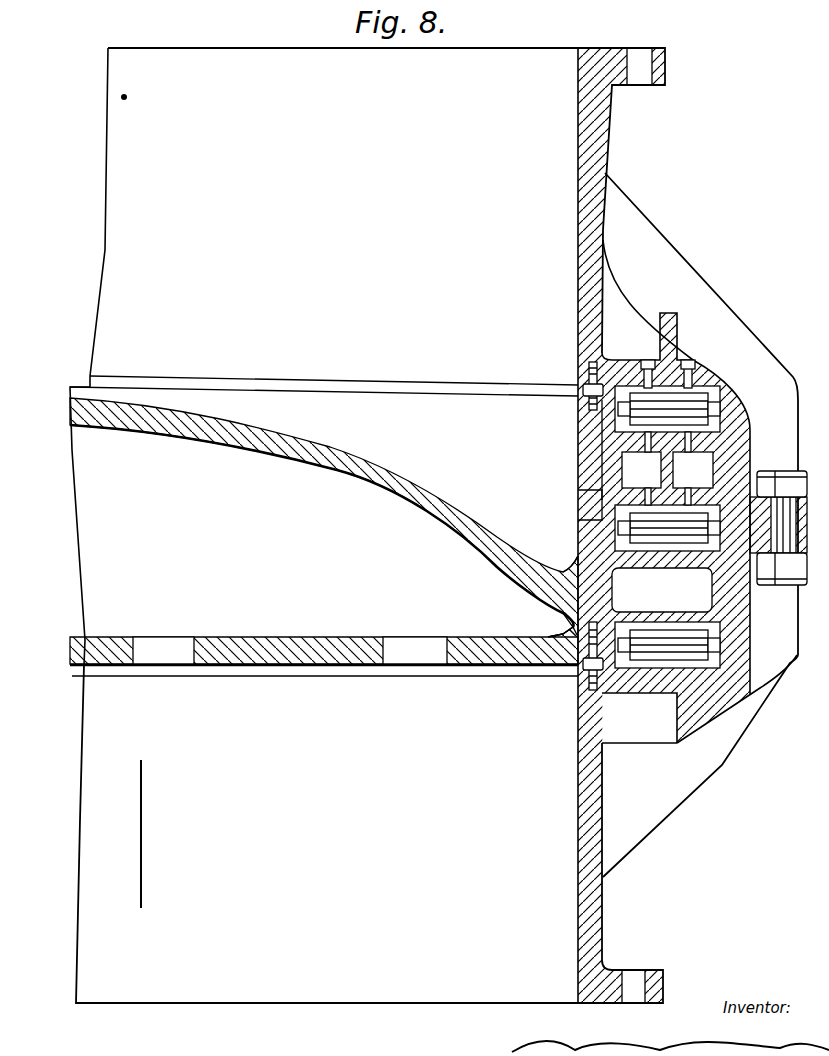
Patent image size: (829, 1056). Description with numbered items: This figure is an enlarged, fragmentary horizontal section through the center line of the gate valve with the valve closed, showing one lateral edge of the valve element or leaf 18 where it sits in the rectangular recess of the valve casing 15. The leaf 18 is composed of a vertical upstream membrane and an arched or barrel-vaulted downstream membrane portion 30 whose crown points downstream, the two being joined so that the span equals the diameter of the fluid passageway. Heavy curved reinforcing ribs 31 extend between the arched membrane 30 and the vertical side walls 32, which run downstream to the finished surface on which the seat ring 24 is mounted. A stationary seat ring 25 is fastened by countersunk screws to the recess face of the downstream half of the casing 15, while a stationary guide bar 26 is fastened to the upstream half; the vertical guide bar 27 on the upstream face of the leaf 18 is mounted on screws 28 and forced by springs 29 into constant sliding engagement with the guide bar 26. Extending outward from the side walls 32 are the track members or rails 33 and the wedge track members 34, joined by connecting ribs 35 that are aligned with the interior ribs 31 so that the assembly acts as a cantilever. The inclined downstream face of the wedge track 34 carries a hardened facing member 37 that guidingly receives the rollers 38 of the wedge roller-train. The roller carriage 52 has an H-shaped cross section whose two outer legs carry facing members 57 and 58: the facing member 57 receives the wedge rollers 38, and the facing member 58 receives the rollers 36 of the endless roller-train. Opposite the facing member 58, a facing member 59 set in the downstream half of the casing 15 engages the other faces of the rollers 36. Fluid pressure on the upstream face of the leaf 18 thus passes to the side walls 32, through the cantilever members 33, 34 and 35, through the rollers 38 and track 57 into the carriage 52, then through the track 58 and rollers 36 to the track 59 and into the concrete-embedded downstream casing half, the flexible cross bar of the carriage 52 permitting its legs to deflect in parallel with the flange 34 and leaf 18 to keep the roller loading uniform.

The valve casing 15 is at (604, 212).
The valve element or leaf 18 is at (330, 665).
The seat ring 24 is at (586, 392).
The stationary seat ring 25 is at (586, 386).
The guide bar 26 is at (588, 672).
The vertical guide bar 27 is at (585, 666).
The screws 28 is at (527, 630).
The springs 29 is at (566, 630).
The downstream membrane portion 30 is at (395, 465).
The reinforcing ribs 31 is at (555, 540).
The vertical side walls 32 is at (580, 462).
The track members or rails 33 is at (712, 610).
The wedge track members 34 is at (680, 566).
The connecting ribs 35 is at (703, 590).
The rollers 36 is at (693, 403).
The facing members 37 is at (585, 520).
The rollers 38 is at (762, 480).
The roller carriage 52 is at (712, 437).
The facing member 57 is at (680, 492).
The facing member 58 is at (641, 468).
The facing member 59 is at (665, 368).